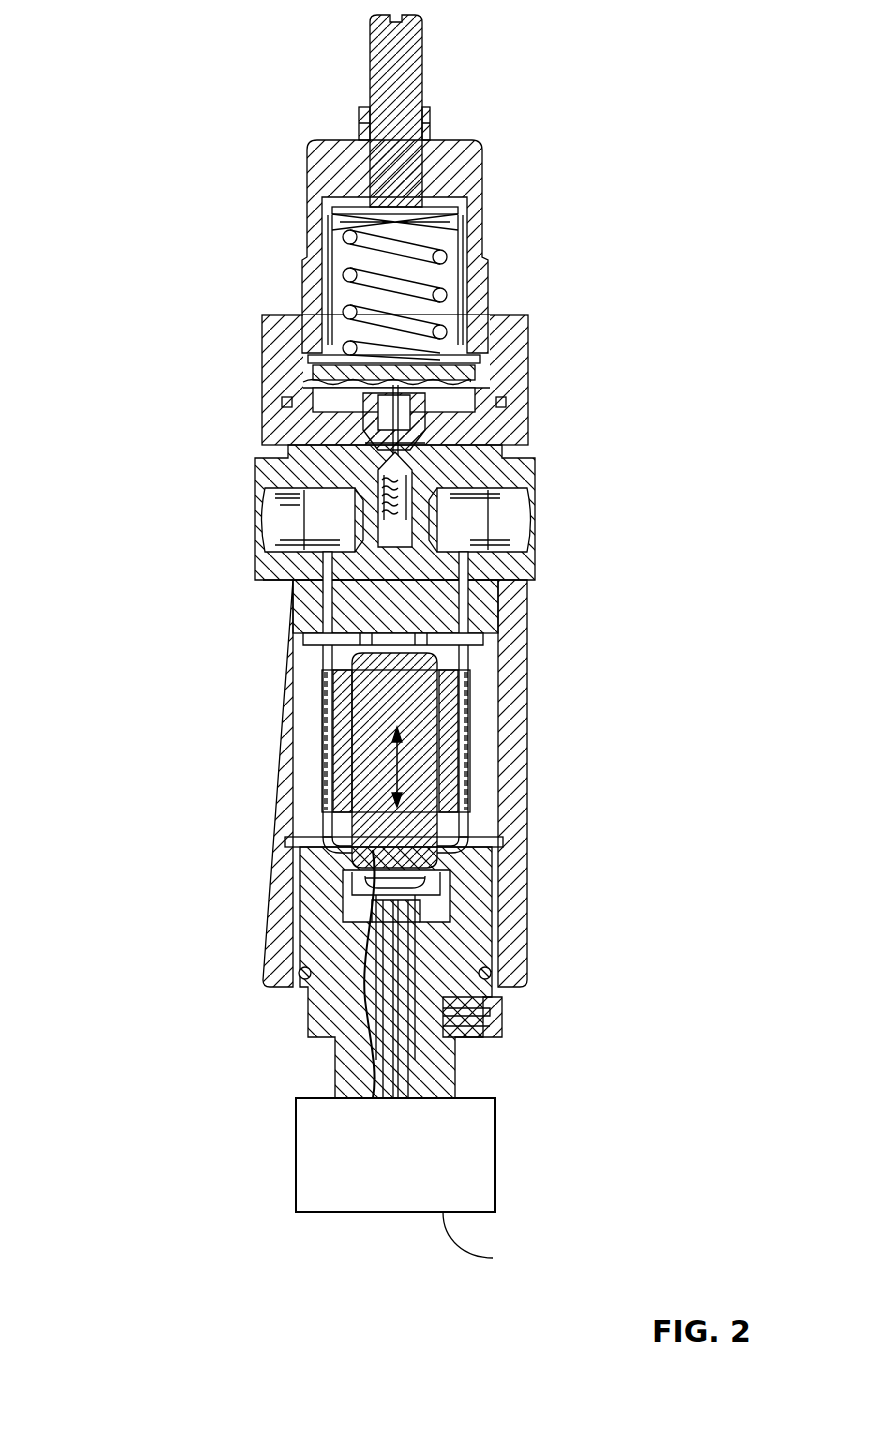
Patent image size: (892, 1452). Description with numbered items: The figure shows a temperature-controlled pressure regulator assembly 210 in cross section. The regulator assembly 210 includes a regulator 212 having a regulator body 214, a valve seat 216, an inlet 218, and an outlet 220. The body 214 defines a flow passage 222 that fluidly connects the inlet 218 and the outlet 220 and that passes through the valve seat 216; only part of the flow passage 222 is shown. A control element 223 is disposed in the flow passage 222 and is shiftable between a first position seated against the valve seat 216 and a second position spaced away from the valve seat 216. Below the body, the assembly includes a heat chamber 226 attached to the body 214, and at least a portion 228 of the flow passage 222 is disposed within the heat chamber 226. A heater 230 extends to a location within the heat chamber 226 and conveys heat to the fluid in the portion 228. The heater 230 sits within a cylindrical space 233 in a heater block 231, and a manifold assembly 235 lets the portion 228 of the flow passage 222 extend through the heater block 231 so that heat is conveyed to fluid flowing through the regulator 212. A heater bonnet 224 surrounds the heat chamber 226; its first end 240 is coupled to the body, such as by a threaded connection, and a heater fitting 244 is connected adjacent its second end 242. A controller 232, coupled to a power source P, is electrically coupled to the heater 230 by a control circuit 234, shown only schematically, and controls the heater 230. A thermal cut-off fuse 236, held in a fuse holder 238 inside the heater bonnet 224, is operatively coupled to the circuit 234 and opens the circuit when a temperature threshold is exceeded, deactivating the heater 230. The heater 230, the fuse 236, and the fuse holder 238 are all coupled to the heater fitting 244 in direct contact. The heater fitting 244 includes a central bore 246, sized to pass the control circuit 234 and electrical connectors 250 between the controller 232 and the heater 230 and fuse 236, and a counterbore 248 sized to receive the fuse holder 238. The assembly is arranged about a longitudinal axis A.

The temperature-controlled pressure regulator assembly 210 is at (482, 34).
The regulator 212 is at (528, 347).
The regulator body 214 is at (523, 447).
The valve seat 216 is at (367, 444).
The inlet 218 is at (508, 500).
The outlet 220 is at (330, 520).
The flow passage 222 is at (310, 560).
The control element 223 is at (392, 467).
The heater bonnet 224 is at (503, 720).
The heat chamber 226 is at (305, 668).
The portion of the flow passage 228 is at (485, 660).
The heater 230 is at (410, 695).
The heater block 231 is at (338, 730).
The cylindrical space 233 is at (325, 712).
The control circuit 234 is at (367, 1005).
The manifold assembly 235 is at (466, 632).
The thermal cut-off fuse 236 is at (452, 870).
The fuse holder 238 is at (365, 878).
The first end 240 is at (518, 592).
The second end 242 is at (508, 940).
The heater fitting 244 is at (478, 975).
The central bore 246 is at (495, 995).
The counterbore 248 is at (458, 905).
The electrical connectors 250 is at (380, 1077).
The controller 232 is at (460, 1150).
The longitudinal axis A is at (385, 768).
The power source P is at (484, 1242).